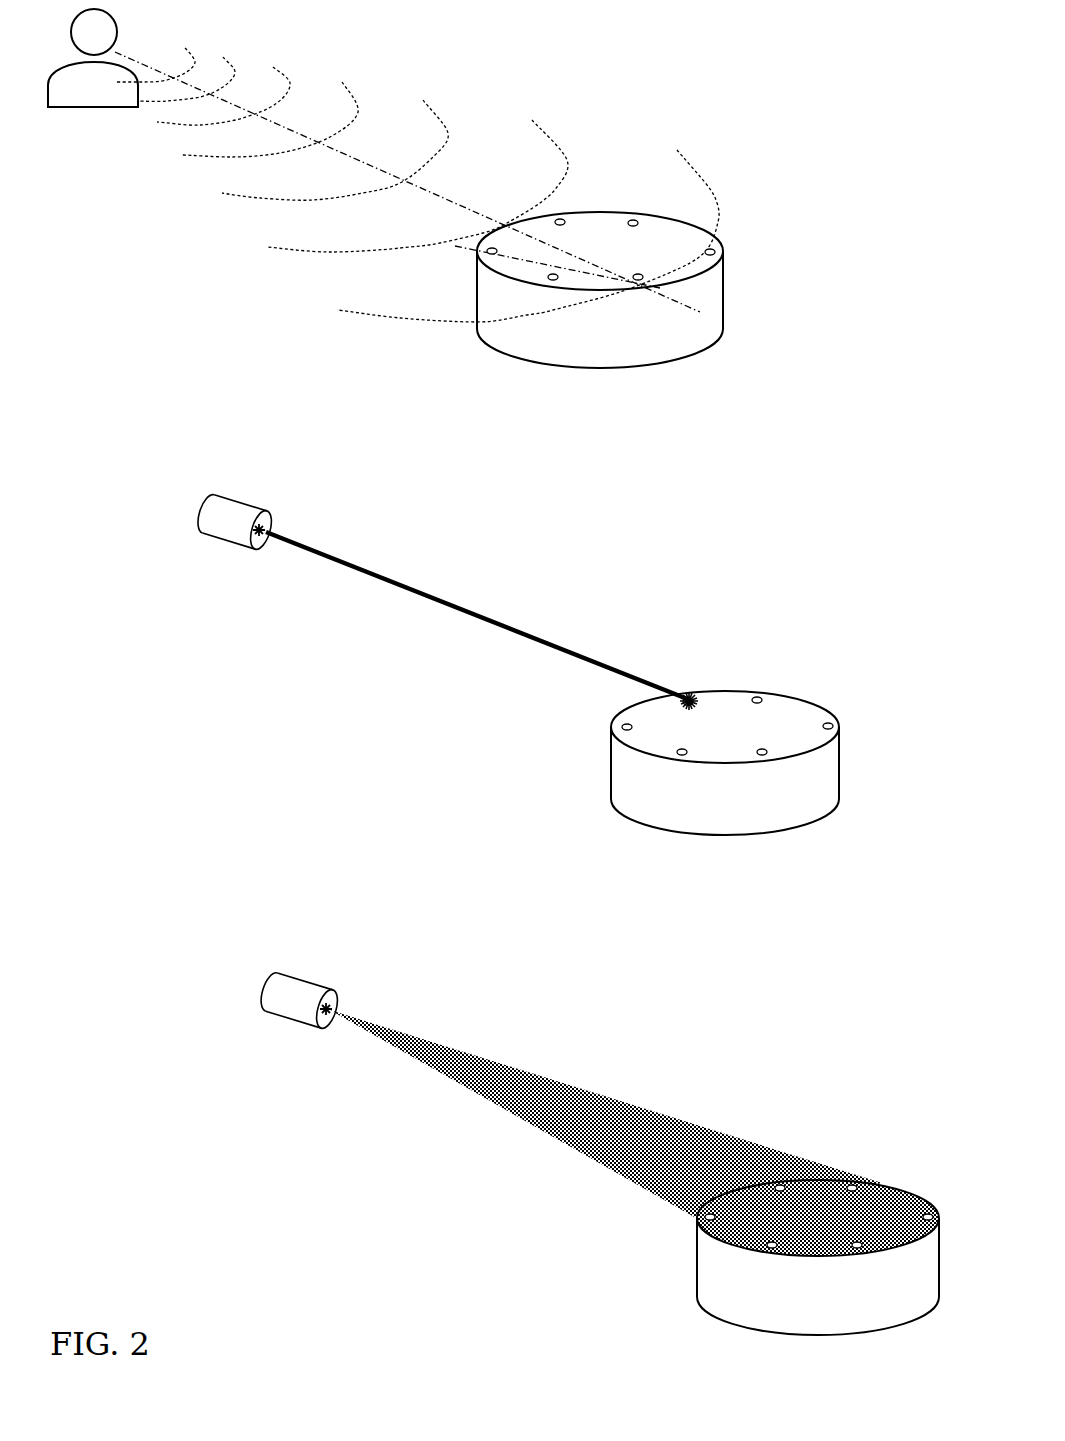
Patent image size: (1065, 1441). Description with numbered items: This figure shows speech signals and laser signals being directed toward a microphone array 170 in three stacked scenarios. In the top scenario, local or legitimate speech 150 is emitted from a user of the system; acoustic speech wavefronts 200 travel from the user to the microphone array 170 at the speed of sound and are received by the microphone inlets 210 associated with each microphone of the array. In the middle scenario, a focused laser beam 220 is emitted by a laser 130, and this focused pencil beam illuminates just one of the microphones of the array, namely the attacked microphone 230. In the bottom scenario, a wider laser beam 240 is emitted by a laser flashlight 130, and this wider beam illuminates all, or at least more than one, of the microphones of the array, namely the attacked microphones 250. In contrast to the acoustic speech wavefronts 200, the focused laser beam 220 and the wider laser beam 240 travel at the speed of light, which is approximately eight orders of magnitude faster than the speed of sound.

The local speech 150 is at (39, 212).
The acoustic speech wavefronts 200 is at (390, 72).
The microphone inlets 210 is at (497, 248).
The microphone array 170 is at (786, 367).
The laser 130 is at (230, 548).
The focused laser beam 220 is at (470, 620).
The attacked microphone 230 is at (703, 693).
The wider laser beam 240 is at (570, 1083).
The attacked microphones 250 is at (774, 1243).